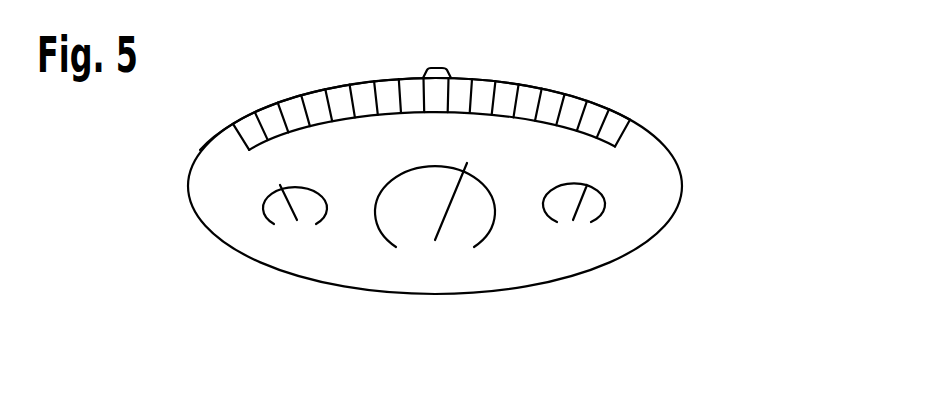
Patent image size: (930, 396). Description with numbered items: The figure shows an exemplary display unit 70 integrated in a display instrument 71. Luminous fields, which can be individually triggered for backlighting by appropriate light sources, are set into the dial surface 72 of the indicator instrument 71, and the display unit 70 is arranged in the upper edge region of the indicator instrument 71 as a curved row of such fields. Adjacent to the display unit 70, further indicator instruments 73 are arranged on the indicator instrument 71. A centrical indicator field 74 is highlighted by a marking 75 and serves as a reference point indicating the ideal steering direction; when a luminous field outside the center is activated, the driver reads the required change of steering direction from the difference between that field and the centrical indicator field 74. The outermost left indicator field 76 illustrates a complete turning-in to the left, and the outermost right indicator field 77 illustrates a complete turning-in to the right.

The display unit 70 is at (432, 75).
The display instrument 71 is at (683, 201).
The dial surface 72 is at (273, 167).
The indicator instruments 73 is at (310, 218).
The centrical indicator field 74 is at (420, 88).
The marking 75 is at (443, 69).
The outermost left indicator field 76 is at (250, 126).
The outermost right indicator field 77 is at (620, 123).